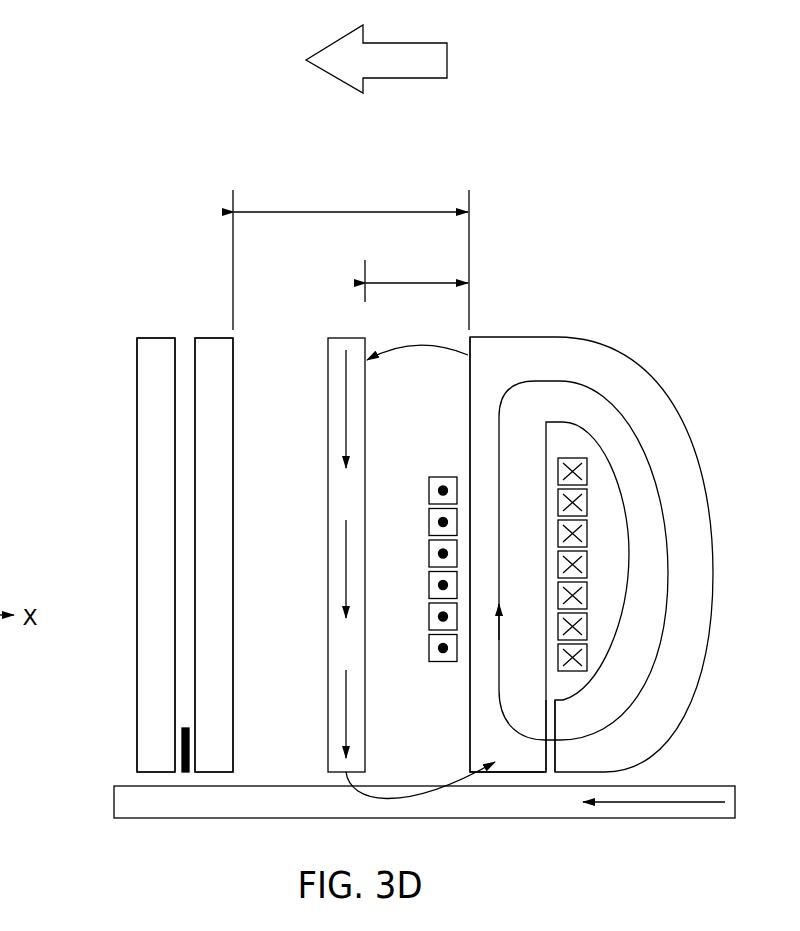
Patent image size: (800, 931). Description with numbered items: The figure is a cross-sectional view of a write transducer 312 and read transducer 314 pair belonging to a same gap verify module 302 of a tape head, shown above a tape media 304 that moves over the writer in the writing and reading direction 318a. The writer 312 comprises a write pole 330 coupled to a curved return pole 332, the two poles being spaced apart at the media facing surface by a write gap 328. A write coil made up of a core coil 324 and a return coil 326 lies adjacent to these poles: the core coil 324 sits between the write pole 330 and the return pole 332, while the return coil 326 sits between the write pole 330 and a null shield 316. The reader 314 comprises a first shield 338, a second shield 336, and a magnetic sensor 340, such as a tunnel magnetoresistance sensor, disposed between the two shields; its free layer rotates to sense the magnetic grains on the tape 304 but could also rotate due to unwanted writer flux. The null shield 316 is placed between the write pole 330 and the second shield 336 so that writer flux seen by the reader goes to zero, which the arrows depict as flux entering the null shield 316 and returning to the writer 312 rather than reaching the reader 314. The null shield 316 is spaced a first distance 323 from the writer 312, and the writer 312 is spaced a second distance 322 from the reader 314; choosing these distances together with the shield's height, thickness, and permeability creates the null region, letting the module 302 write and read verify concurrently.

The SGV module 302 is at (175, 218).
The tape media 304 is at (316, 812).
The write transducer 312 is at (675, 260).
The read transducer 314 is at (135, 333).
The null shield 316 is at (350, 345).
The writing and reading direction 318a is at (376, 59).
The second distance 322 is at (351, 257).
The first distance 323 is at (416, 277).
The core coil 324 is at (560, 446).
The return coil 326 is at (441, 455).
The write gap 328 is at (551, 775).
The write pole 330 is at (480, 725).
The return pole 332 is at (622, 388).
The second shield 336 is at (218, 443).
The first shield 338 is at (145, 445).
The magnetic sensor 340 is at (184, 772).